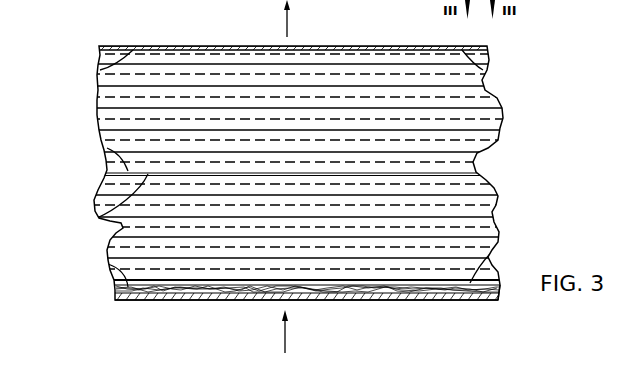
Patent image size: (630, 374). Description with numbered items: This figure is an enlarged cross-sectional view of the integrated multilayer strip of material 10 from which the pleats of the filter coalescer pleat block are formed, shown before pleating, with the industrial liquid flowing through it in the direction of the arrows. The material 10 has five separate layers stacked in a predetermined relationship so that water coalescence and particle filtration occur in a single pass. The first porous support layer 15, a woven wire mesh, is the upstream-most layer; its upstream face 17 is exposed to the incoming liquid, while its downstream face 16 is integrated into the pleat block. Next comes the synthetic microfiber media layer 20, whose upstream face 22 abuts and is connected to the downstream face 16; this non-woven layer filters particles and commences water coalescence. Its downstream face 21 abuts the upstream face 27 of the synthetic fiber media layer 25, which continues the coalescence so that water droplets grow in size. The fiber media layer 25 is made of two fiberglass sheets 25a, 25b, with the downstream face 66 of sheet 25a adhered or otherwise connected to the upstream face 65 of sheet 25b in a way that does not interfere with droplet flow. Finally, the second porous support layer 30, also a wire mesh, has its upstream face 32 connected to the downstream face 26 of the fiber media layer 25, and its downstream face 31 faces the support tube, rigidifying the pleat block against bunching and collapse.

The multilayer strip of material 10 is at (90, 40).
The first porous support layer 15 is at (498, 300).
The downstream face of first support layer 16 is at (491, 284).
The upstream face of first support layer 17 is at (434, 300).
The synthetic microfiber media layer 20 is at (114, 290).
The downstream face of microfiber media layer 21 is at (108, 264).
The upstream face of microfiber media layer 22 is at (137, 300).
The synthetic fiber media layer 25 is at (104, 174).
The fiberglass sheet 25a is at (497, 192).
The fiberglass sheet 25b is at (497, 122).
The downstream face of fiber media layer 26 is at (483, 70).
The upstream face of fiber media layer 27 is at (490, 254).
The second porous support layer 30 is at (481, 46).
The downstream face of second support layer 31 is at (401, 46).
The upstream face of second support layer 32 is at (100, 70).
The upstream face of fiberglass sheet 25b 65 is at (110, 220).
The downstream face of fiberglass sheet 25a 66 is at (107, 148).